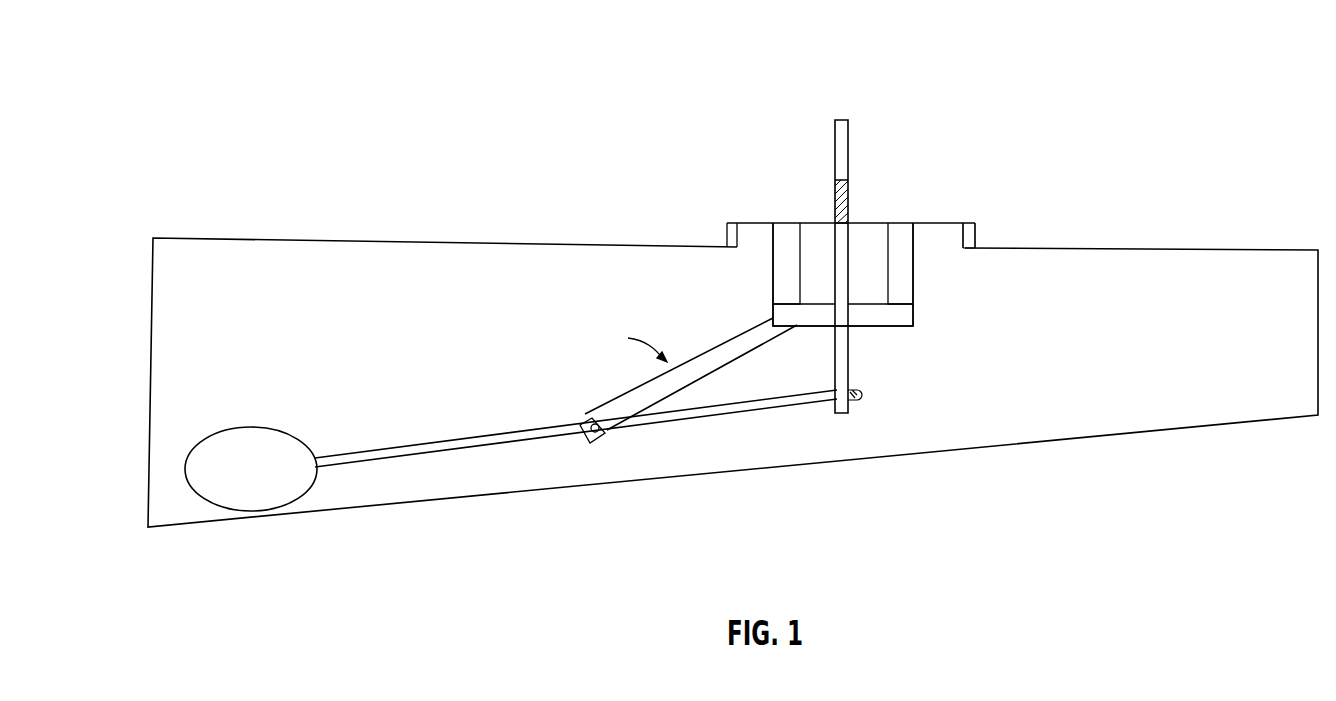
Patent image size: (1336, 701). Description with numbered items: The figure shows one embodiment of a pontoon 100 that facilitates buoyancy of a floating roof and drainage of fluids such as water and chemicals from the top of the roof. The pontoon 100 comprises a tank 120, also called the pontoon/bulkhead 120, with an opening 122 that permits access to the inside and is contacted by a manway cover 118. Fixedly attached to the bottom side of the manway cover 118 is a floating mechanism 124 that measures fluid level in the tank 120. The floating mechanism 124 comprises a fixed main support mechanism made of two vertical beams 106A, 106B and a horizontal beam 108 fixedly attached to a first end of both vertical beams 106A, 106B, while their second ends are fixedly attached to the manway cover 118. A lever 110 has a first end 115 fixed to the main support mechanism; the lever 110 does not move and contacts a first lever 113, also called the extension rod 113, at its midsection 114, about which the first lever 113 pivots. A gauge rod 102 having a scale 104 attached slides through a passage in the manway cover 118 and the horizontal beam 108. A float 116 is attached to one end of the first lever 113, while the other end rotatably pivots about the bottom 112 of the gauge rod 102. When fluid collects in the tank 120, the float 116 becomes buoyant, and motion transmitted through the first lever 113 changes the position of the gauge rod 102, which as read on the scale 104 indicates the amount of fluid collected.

The pontoon 100 is at (1015, 78).
The gauge rod 102 is at (840, 117).
The scale 104 is at (850, 193).
The vertical beam 106A is at (905, 263).
The vertical beam 106B is at (778, 252).
The horizontal beam 108 is at (887, 318).
The lever 110 is at (743, 330).
The bottom of the gauge rod 112 is at (862, 400).
The first lever 113 is at (420, 443).
The midsection 114 is at (585, 422).
The first end 115 is at (785, 318).
The float 116 is at (232, 503).
The manway cover 118 is at (942, 240).
The tank 120 is at (1202, 422).
The opening 122 is at (963, 223).
The floating mechanism 124 is at (625, 340).